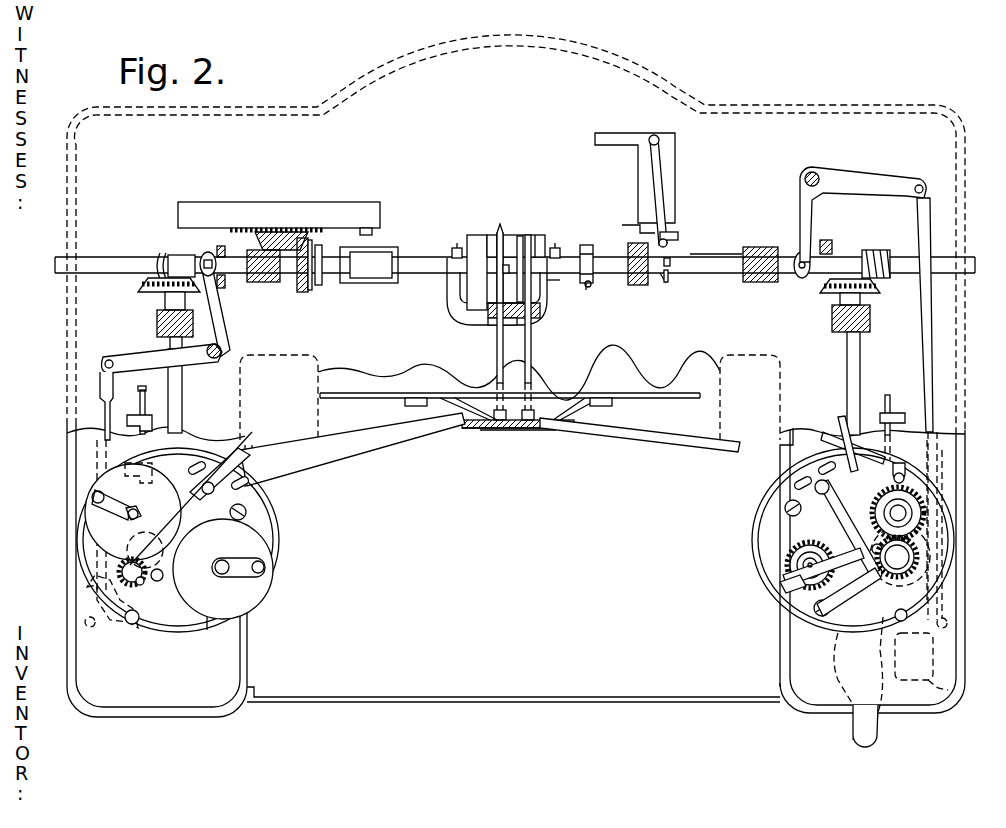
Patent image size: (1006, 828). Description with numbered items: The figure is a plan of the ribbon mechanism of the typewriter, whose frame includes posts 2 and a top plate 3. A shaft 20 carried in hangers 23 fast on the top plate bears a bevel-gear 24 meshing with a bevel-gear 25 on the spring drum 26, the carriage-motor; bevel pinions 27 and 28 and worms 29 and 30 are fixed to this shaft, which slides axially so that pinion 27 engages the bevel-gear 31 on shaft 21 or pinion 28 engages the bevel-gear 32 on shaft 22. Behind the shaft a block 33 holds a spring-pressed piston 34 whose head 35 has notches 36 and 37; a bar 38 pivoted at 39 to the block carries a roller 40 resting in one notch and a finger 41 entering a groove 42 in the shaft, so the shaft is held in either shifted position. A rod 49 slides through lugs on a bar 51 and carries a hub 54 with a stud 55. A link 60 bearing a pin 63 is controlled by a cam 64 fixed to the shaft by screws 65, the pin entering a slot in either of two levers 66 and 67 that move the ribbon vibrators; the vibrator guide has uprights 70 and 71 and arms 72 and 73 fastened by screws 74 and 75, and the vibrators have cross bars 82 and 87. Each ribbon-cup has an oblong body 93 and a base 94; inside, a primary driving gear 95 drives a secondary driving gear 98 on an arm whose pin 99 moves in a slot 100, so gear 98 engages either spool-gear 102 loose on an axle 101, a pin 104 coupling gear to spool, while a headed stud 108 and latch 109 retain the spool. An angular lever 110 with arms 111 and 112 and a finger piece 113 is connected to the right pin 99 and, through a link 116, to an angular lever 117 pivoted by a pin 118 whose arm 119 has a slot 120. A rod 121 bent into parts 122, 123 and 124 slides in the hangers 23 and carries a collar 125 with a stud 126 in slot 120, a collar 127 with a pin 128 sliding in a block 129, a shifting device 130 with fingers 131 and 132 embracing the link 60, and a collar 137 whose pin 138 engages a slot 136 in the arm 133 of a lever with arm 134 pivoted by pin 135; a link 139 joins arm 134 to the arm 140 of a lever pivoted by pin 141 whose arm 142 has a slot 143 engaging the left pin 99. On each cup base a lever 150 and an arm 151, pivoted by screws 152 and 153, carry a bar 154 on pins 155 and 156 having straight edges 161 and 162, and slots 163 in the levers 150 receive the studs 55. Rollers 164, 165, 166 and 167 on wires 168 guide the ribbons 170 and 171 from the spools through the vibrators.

The posts 2 is at (938, 689).
The top plate 3 is at (772, 107).
The shaft 20 is at (408, 262).
The shaft 21 is at (180, 391).
The shaft 22 is at (860, 345).
The hangers 23 is at (264, 282).
The bevel-gear 24 is at (303, 292).
The bevel-gear 25 is at (262, 238).
The spring drum 26 is at (324, 208).
The bevel pinion 27 is at (222, 288).
The bevel pinion 28 is at (830, 252).
The worm 29 is at (160, 258).
The worm 30 is at (882, 256).
The bevel-gear 31 is at (148, 287).
The bevel-gear 32 is at (832, 300).
The block 33 is at (675, 195).
The spring-pressed piston 34 is at (635, 229).
The head 35 is at (678, 236).
The notch 36 is at (628, 255).
The notch 37 is at (667, 244).
The bar 38 is at (660, 160).
The pivot 39 is at (654, 135).
The roller 40 is at (668, 250).
The finger 41 is at (664, 276).
The groove 42 is at (668, 276).
The rod 49 is at (143, 398).
The bar 51 is at (132, 430).
The hub 54 is at (148, 470).
The stud 55 is at (899, 463).
The link 60 is at (500, 226).
The pin 63 is at (522, 264).
The cam 64 is at (545, 240).
The screws 65 is at (457, 246).
The lever 66 is at (497, 360).
The lever 67 is at (531, 345).
The upright 70 is at (500, 428).
The upright 71 is at (530, 428).
The arm 72 is at (450, 402).
The arm 73 is at (565, 402).
The screw 74 is at (413, 400).
The screw 75 is at (608, 401).
The cross bar 82 is at (514, 430).
The cross bar 87 is at (506, 420).
The oblong body 93 is at (277, 528).
The base 94 is at (270, 546).
The primary driving gear 95 is at (856, 530).
The secondary driving gear 98 is at (130, 565).
The pin 99 is at (138, 566).
The slot 100 is at (174, 583).
The ribbon spool axles 101 is at (900, 506).
The gear 102 is at (910, 556).
The pin 104 is at (892, 510).
The headed stud 108 is at (128, 514).
The latches 109 is at (128, 509).
The angular lever 110 is at (840, 668).
The arm 111 is at (905, 566).
The arm 112 is at (920, 637).
The finger piece 113 is at (866, 735).
The link 116 is at (930, 292).
The angular lever 117 is at (848, 178).
The pin 118 is at (812, 173).
The arm 119 is at (812, 208).
The slot 120 is at (798, 254).
The rod 121 is at (181, 260).
The part 122 is at (547, 300).
The part 123 is at (463, 325).
The part 124 is at (447, 296).
The collar 125 is at (798, 276).
The stud 126 is at (803, 272).
The collar 127 is at (588, 292).
The pin 128 is at (592, 282).
The block 129 is at (636, 286).
The shifting device 130 is at (508, 318).
The finger 131 is at (495, 292).
The finger 132 is at (508, 264).
The arm 133 is at (215, 330).
The arm 134 is at (130, 362).
The pin 135 is at (213, 359).
The slot 136 is at (205, 256).
The collar 137 is at (210, 256).
The pin 138 is at (224, 250).
The link 139 is at (102, 415).
The arm 140 is at (102, 626).
The pin 141 is at (138, 622).
The arm 142 is at (157, 581).
The slot 143 is at (157, 530).
The lever 150 is at (848, 450).
The arm 151 is at (852, 590).
The screw 152 is at (238, 520).
The screw 153 is at (210, 620).
The bar 154 is at (193, 520).
The pin 155 is at (247, 436).
The pin 156 is at (139, 585).
The straight edge 161 is at (784, 575).
The straight edge 162 is at (920, 500).
The slot 163 is at (905, 475).
The roller 164 is at (203, 466).
The roller 165 is at (245, 484).
The roller 166 is at (828, 464).
The roller 167 is at (795, 482).
The wires 168 is at (238, 482).
The ribbon 170 is at (362, 432).
The ribbon 171 is at (386, 440).